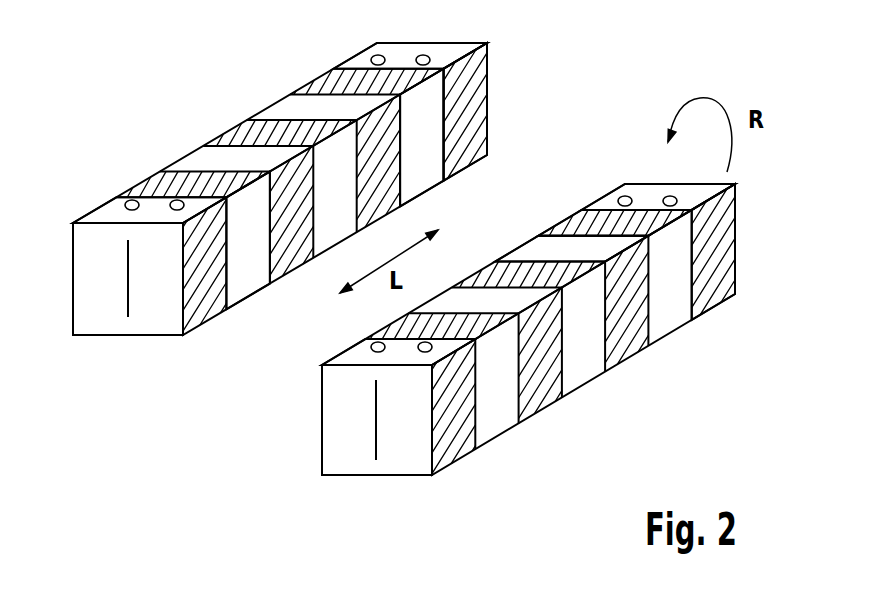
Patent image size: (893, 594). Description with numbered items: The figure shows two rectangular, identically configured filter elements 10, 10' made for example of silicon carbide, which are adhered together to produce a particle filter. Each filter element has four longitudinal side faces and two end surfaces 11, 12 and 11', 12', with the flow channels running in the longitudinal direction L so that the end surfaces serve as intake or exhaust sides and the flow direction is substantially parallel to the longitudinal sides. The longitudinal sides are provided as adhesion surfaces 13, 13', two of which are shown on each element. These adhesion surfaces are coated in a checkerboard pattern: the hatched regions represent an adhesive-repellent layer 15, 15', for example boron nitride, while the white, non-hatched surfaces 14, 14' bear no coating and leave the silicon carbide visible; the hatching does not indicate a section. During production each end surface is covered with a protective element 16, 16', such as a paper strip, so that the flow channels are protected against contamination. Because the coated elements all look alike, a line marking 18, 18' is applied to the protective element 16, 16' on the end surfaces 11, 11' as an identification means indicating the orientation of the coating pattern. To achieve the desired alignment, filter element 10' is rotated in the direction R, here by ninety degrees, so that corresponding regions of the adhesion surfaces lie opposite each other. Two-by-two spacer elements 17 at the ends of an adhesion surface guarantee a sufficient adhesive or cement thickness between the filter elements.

The filter element 10 is at (280, 189).
The end surface 11 is at (124, 299).
The end surface 12 is at (461, 108).
The adhesion surface 13 is at (474, 138).
The uncoated surface 14 is at (251, 278).
The adhesive-repellent layer 15 is at (207, 302).
The protective element 16 is at (128, 328).
The spacer element 17 is at (124, 205).
The line marking 18 is at (69, 278).
The filter element 10' is at (528, 334).
The end surface 11' is at (371, 440).
The end surface 12' is at (709, 247).
The adhesion surface 13' is at (614, 175).
The uncoated surface 14' is at (613, 309).
The adhesive-repellent layer 15' is at (467, 396).
The protective element 16' is at (377, 460).
The line marking 18' is at (318, 429).